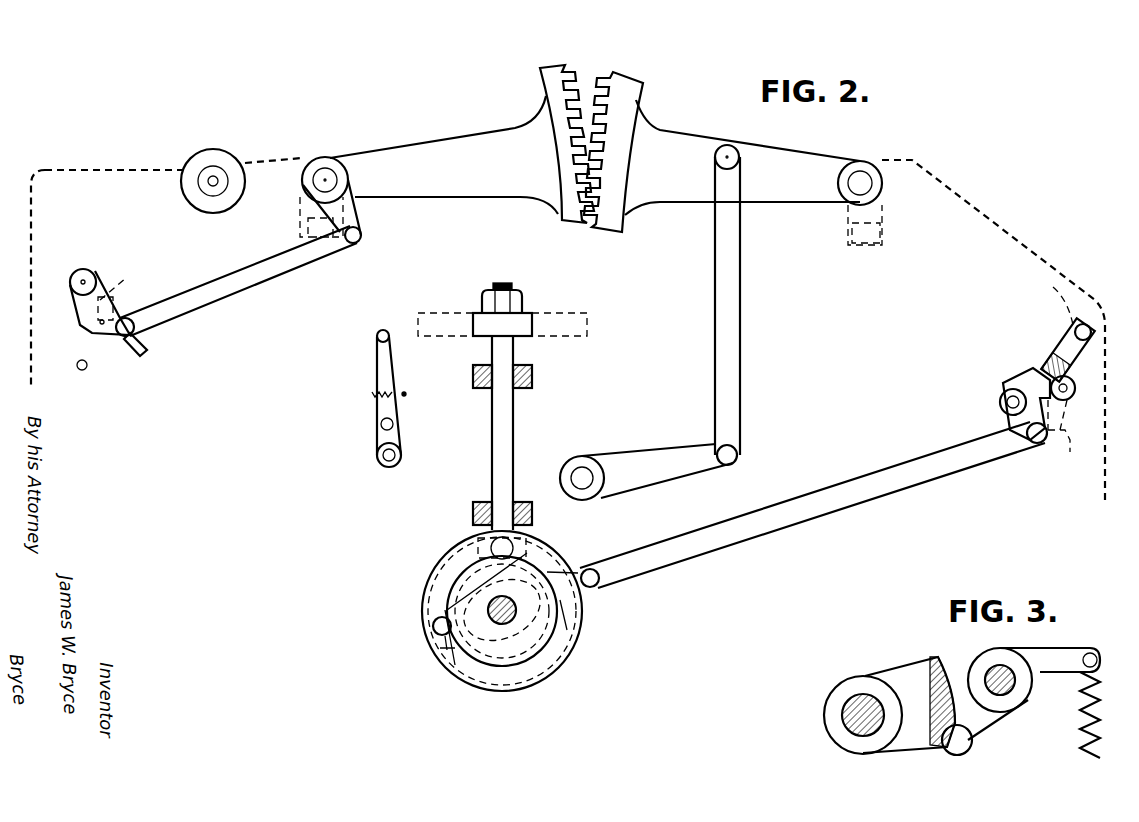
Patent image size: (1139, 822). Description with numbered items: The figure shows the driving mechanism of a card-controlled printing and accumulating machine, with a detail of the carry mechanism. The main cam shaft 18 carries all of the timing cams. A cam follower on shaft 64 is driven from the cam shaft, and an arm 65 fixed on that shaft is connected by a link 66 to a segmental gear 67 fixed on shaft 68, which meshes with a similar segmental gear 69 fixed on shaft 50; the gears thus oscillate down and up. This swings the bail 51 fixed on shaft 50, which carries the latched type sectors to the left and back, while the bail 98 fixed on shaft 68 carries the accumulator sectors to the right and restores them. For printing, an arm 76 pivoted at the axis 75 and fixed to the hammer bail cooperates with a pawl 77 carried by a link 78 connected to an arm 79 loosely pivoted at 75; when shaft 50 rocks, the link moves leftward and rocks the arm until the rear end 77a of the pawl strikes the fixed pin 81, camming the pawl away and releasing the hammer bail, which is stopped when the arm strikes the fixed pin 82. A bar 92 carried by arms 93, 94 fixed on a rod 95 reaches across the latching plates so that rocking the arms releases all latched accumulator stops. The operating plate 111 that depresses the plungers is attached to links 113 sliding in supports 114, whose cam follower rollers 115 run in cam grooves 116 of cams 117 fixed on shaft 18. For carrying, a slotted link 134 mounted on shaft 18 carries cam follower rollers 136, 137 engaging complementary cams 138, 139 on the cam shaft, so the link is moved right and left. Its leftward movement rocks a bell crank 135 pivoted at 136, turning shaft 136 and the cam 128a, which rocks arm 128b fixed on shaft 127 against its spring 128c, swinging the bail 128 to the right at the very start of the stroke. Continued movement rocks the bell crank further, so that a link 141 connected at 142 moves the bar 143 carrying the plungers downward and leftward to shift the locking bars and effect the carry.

In FIG. 2, the cam shaft 18 is at (505, 615).
In FIG. 2, the shaft 50 is at (326, 178).
In FIG. 2, the bail 51 is at (300, 228).
In FIG. 2, the shaft 64 is at (585, 475).
In FIG. 2, the arm 65 is at (668, 455).
In FIG. 2, the link 66 is at (722, 280).
In FIG. 2, the segmental gear 67 is at (776, 195).
In FIG. 2, the shaft 68 is at (862, 183).
In FIG. 2, the segmental gear 69 is at (431, 197).
In FIG. 2, the axis 75 is at (84, 270).
In FIG. 2, the arm 76 is at (80, 318).
In FIG. 2, the pawl 77 is at (103, 325).
In FIG. 2, the rear end of pawl 77a is at (150, 355).
In FIG. 2, the link 78 is at (182, 312).
In FIG. 2, the arm 79 is at (115, 306).
In FIG. 2, the fixed pin 81 is at (84, 370).
In FIG. 2, the fixed pin 82 is at (123, 288).
In FIG. 2, the bar 92 is at (393, 424).
In FIG. 2, the arm 93 is at (372, 367).
In FIG. 2, the arm 94 is at (378, 408).
In FIG. 2, the rod 95 is at (377, 455).
In FIG. 2, the bail 98 is at (882, 238).
In FIG. 2, the operating plate 111 is at (587, 323).
In FIG. 2, the link 113 is at (500, 351).
In FIG. 2, the support 114 is at (532, 377).
In FIG. 2, the cam follower roller 115 is at (543, 534).
In FIG. 2, the cam groove 116 is at (452, 560).
In FIG. 2, the cam 117 is at (436, 572).
In FIG. 2, the pivot shaft 127 is at (1070, 397).
In FIG. 3, the pivot shaft 127 is at (1007, 668).
In FIG. 2, the bail 128 is at (1071, 435).
In FIG. 3, the cam 128a is at (915, 663).
In FIG. 3, the arm 128b is at (985, 727).
In FIG. 3, the spring 128c is at (1080, 698).
In FIG. 2, the link 134 is at (823, 505).
In FIG. 2, the bell crank 135 is at (1017, 384).
In FIG. 3, the shaft 136 is at (858, 705).
In FIG. 2, the cam follower roller 137 is at (600, 583).
In FIG. 2, the cam 138 is at (440, 648).
In FIG. 2, the cam 139 is at (585, 625).
In FIG. 2, the link 141 is at (1045, 358).
In FIG. 2, the connection 142 is at (1060, 338).
In FIG. 2, the bar 143 is at (1051, 300).